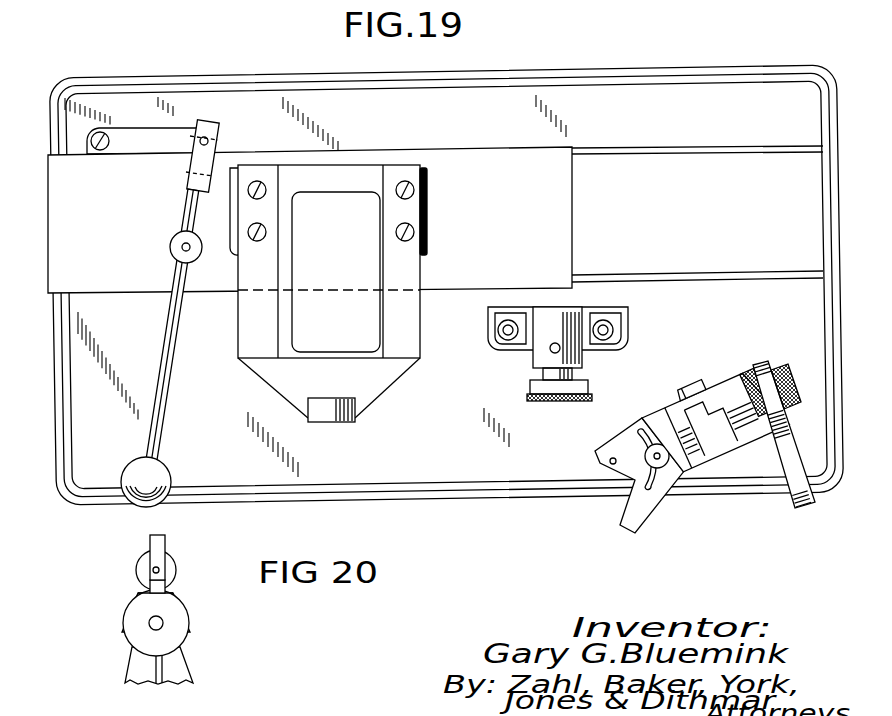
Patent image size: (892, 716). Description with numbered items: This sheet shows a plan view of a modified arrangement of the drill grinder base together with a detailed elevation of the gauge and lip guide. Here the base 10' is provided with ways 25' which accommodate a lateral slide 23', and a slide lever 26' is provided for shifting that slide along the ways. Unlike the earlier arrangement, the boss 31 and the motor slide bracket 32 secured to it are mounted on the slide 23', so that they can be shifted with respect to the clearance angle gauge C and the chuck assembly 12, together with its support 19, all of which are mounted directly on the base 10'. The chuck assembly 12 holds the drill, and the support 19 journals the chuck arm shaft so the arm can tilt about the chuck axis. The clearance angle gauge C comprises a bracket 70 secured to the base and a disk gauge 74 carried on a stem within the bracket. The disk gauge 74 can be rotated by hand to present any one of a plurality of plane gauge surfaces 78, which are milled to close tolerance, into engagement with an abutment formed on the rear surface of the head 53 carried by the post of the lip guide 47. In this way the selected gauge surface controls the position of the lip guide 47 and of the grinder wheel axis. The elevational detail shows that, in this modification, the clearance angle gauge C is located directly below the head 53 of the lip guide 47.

In FIG. 19, the base 10' is at (447, 272).
In FIG. 19, the lateral slide 23' is at (310, 210).
In FIG. 19, the ways 25' is at (697, 214).
In FIG. 19, the slide lever 26' is at (170, 313).
In FIG. 19, the boss 31 is at (432, 196).
In FIG. 19, the motor slide bracket 32 is at (251, 323).
In FIG. 19, the bracket 70 is at (603, 307).
In FIG. 20, the bracket 70 is at (135, 665).
In FIG. 19, the clearance angle gauge C is at (585, 343).
In FIG. 20, the clearance angle gauge C is at (161, 607).
In FIG. 19, the chuck assembly 12 is at (669, 496).
In FIG. 19, the support 19 is at (740, 443).
In FIG. 20, the lip guide 47 is at (150, 543).
In FIG. 20, the head 53 is at (167, 580).
In FIG. 20, the gauge surfaces 78 is at (133, 608).
In FIG. 20, the disk gauge 74 is at (178, 635).